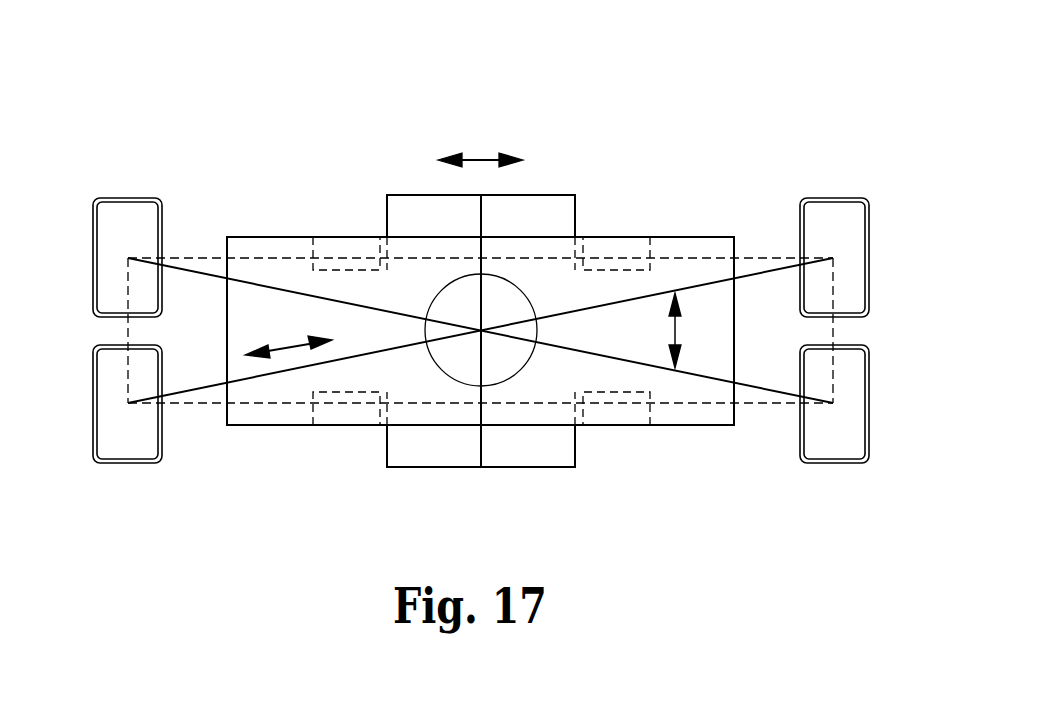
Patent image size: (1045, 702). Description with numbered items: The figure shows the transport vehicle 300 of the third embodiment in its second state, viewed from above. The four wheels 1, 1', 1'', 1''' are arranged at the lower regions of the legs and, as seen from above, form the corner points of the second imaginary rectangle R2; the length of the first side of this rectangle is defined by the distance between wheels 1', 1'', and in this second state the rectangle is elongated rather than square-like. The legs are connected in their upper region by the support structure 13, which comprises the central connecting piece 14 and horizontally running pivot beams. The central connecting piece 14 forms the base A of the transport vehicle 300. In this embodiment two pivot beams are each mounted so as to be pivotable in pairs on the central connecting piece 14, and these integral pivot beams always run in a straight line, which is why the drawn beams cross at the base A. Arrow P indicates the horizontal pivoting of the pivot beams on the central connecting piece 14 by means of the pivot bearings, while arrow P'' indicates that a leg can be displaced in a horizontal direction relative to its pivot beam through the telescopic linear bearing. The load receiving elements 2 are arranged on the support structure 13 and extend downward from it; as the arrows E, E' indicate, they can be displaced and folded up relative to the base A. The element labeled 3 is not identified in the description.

The transport vehicle 300 is at (852, 76).
The wheel 1 is at (834, 220).
The wheel 1' is at (834, 444).
The wheel 1'' is at (127, 441).
The wheel 1''' is at (133, 217).
The load receiving element 2 is at (555, 195).
The base body 3 is at (720, 333).
The support structure 13 is at (346, 245).
The central connecting piece 14 is at (420, 293).
The base A is at (458, 352).
The arrow E is at (480, 124).
The arrow E' is at (640, 164).
The arrow P is at (645, 330).
The arrow P'' is at (288, 418).
The second imaginary rectangle R2 is at (128, 337).